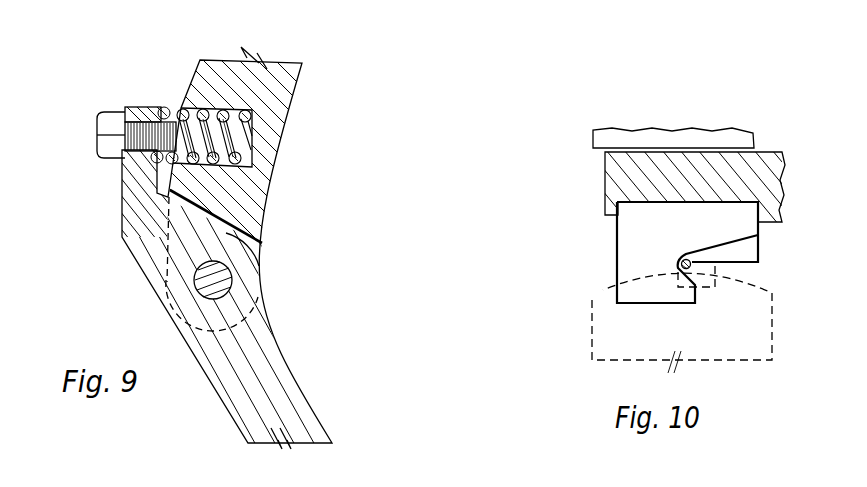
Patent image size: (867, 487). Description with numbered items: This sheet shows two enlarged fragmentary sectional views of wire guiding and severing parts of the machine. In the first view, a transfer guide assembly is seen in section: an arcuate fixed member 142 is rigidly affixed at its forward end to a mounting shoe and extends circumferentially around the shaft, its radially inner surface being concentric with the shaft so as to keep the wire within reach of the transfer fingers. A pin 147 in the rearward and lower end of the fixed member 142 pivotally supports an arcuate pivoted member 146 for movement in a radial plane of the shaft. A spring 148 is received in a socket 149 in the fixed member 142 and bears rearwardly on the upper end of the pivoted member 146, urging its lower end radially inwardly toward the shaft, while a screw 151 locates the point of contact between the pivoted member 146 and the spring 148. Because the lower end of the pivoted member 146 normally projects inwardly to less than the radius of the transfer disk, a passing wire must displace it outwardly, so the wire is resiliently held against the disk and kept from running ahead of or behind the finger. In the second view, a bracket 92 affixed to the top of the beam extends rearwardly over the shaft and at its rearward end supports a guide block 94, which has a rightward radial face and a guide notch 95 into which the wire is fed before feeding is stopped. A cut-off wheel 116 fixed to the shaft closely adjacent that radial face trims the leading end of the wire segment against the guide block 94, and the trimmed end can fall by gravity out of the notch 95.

In FIG. 9, the fixed member 142 is at (252, 212).
In FIG. 9, the pivoted member 146 is at (280, 363).
In FIG. 9, the pin 147 is at (233, 286).
In FIG. 9, the spring 148 is at (182, 116).
In FIG. 9, the socket 149 is at (215, 111).
In FIG. 9, the screw 151 is at (100, 128).
In FIG. 10, the bracket 92 is at (608, 177).
In FIG. 10, the guide block 94 is at (620, 263).
In FIG. 10, the guide notch 95 is at (684, 254).
In FIG. 10, the cut-off wheel 116 is at (592, 300).